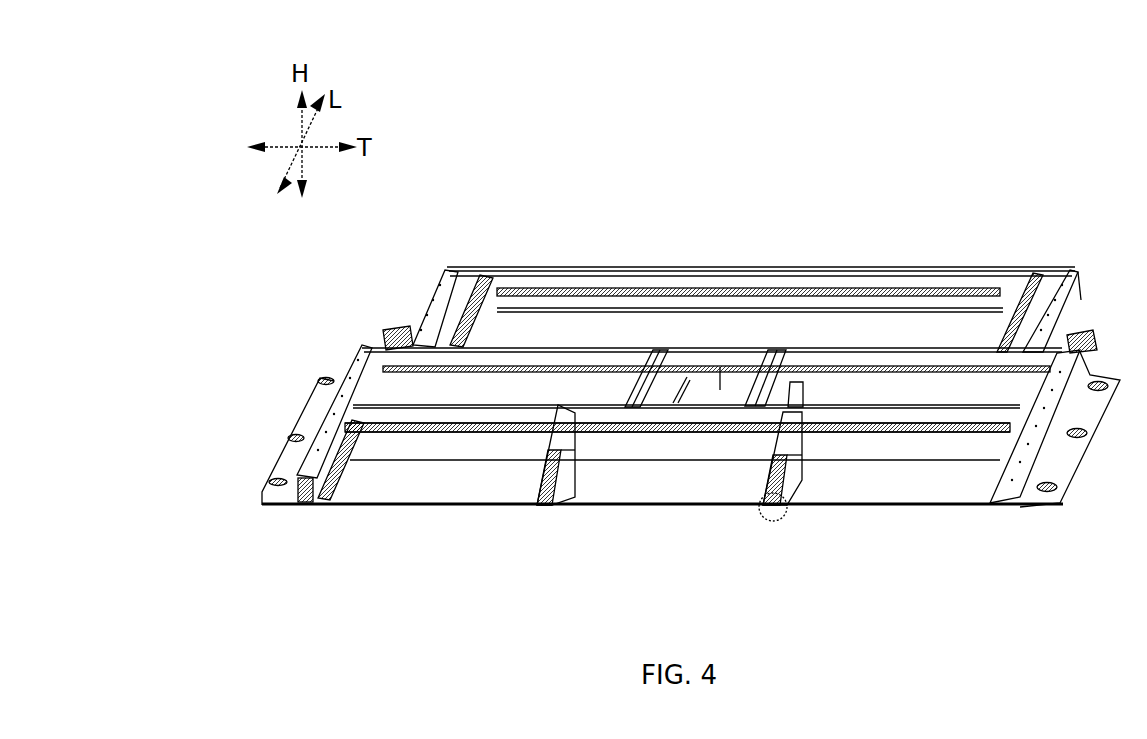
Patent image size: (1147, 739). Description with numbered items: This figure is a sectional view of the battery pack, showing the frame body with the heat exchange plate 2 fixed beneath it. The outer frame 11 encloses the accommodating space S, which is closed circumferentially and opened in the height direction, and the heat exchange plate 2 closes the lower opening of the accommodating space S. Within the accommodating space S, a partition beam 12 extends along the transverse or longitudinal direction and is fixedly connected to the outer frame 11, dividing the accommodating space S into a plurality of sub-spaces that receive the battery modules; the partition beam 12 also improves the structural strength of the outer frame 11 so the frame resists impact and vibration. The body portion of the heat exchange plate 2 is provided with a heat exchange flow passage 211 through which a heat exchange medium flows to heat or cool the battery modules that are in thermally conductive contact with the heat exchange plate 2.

The heat exchange plate 2 is at (407, 490).
The outer frame 11 is at (280, 450).
The partition beam 12 is at (535, 468).
The heat exchange flow passage 211 is at (587, 507).
The accommodating space S is at (1030, 447).